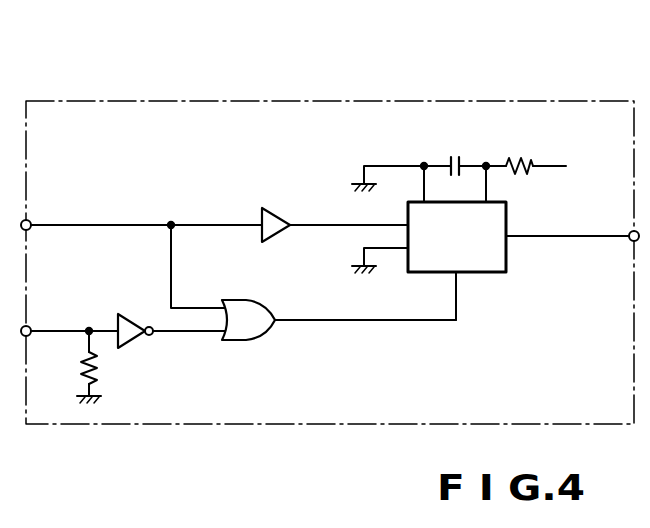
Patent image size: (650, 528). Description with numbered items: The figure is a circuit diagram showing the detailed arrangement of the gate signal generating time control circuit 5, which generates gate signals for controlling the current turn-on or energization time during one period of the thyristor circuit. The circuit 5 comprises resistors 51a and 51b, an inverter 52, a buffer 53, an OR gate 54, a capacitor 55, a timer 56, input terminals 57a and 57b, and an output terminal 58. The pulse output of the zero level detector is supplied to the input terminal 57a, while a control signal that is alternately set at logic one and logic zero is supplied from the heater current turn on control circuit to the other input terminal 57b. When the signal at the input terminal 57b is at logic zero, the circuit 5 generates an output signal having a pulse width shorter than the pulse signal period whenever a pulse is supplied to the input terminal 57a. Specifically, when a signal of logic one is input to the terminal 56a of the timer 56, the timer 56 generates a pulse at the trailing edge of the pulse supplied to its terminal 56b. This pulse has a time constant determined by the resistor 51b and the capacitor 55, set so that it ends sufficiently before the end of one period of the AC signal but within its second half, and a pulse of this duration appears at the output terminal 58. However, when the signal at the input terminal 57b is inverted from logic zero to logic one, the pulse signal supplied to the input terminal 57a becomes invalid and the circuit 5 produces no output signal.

The gate signal generating time control circuit 5 is at (60, 100).
The resistor 51a is at (99, 368).
The resistor 51b is at (521, 160).
The inverter 52 is at (121, 315).
The buffer 53 is at (275, 210).
The OR gate 54 is at (255, 300).
The capacitor 55 is at (458, 158).
The timer 56 is at (495, 273).
The terminal of the timer 56a is at (452, 273).
The terminal of the timer 56b is at (408, 220).
The input terminal 57a is at (31, 222).
The input terminal 57b is at (31, 328).
The output terminal 58 is at (633, 242).